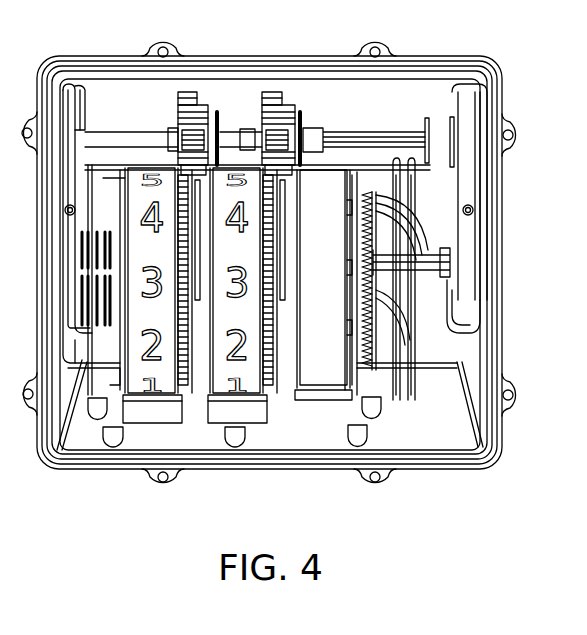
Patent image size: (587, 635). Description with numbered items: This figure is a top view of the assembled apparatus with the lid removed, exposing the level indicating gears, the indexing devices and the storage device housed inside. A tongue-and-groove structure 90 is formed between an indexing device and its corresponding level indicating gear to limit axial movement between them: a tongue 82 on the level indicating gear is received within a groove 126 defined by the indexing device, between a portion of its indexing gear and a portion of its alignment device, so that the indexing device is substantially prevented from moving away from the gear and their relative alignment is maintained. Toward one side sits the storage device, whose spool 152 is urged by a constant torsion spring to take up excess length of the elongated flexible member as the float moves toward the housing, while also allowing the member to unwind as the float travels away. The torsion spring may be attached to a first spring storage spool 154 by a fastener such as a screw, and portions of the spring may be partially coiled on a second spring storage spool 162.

The tongue 82 is at (303, 363).
The tongue-and-groove structure 90 is at (320, 158).
The groove 126 is at (296, 107).
The spool 152 is at (412, 400).
The first spring storage spool 154 is at (455, 285).
The second spring storage spool 162 is at (455, 133).